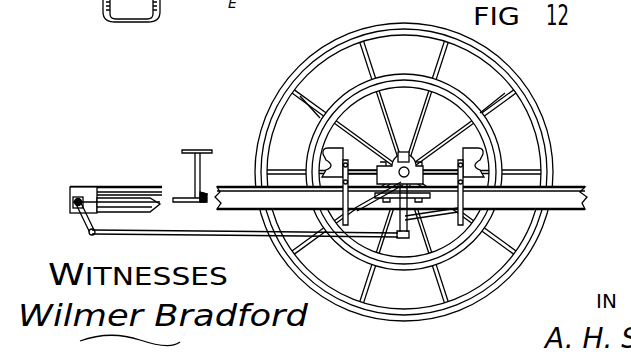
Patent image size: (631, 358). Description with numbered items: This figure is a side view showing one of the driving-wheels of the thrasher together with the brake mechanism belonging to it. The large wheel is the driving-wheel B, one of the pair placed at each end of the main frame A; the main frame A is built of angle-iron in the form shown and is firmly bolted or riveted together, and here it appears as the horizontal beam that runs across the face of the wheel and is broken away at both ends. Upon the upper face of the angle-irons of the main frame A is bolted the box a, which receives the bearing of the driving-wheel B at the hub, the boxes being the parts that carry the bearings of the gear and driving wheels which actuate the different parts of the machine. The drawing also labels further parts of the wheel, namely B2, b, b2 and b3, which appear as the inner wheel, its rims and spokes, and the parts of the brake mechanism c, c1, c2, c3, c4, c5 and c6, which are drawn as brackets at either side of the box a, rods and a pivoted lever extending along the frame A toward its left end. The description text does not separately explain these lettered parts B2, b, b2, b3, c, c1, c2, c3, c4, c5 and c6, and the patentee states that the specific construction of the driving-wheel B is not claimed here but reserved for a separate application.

The main frame A is at (69, 189).
The driving-wheel B is at (548, 142).
The inner wheel B2 is at (404, 172).
The box a is at (413, 173).
The rim flange b is at (265, 117).
The rim web b2 is at (312, 74).
The spokes b3 is at (438, 68).
The rod c is at (403, 238).
The bracket c1 is at (341, 199).
The bracket c2 is at (464, 199).
The connecting rod c3 is at (215, 233).
The pivot c4 is at (73, 202).
The pawl block c5 is at (128, 203).
The lever c6 is at (201, 158).